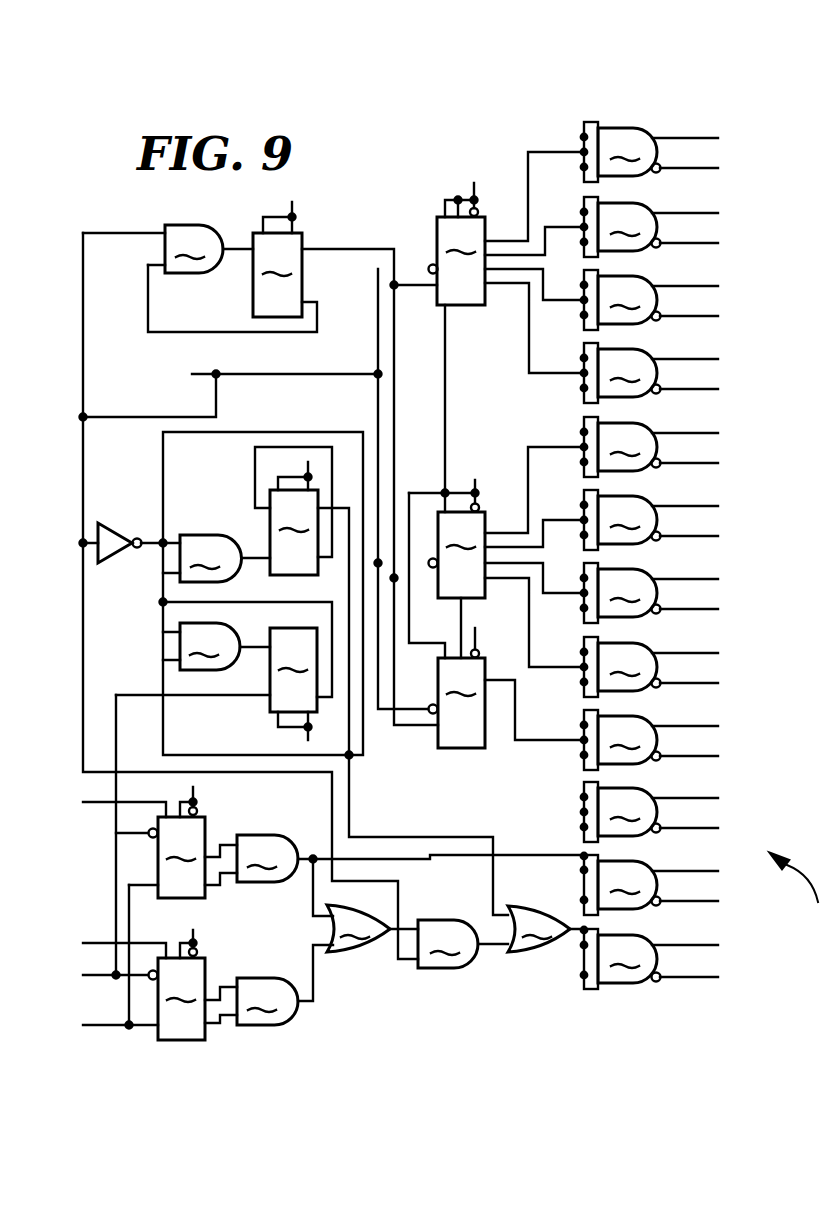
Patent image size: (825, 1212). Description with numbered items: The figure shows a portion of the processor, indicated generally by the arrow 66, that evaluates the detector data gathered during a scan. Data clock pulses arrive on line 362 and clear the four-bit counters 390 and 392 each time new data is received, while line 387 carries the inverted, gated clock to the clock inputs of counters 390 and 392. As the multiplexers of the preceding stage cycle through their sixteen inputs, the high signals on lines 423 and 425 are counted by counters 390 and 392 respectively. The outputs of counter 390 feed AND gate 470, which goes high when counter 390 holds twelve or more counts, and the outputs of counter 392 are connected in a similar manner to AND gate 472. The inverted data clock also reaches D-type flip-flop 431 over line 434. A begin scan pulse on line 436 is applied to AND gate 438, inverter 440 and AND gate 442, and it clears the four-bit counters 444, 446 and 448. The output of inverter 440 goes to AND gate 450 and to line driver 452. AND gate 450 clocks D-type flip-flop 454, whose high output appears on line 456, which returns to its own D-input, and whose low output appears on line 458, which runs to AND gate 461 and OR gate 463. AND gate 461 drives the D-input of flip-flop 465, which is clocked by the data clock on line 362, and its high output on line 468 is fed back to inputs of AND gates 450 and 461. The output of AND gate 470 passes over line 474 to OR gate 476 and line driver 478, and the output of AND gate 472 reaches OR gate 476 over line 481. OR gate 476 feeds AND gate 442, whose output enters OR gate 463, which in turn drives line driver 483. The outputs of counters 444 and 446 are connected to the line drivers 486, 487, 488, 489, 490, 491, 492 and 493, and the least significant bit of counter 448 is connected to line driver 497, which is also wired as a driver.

The control logic circuit 66 is at (797, 888).
The line 362 is at (100, 978).
The line 387 is at (143, 1024).
The 4-bit counter 390 is at (167, 842).
The 4-bit counter 392 is at (177, 985).
The line 423 is at (132, 801).
The line 425 is at (138, 942).
The D-type flip-flop 431 is at (345, 259).
The line 434 is at (249, 301).
The line 436 is at (193, 373).
The AND gate 438 is at (168, 249).
The invertor 440 is at (121, 530).
The AND gate 442 is at (448, 944).
The 4-bit counter 444 is at (507, 332).
The 4-bit counter 446 is at (496, 557).
The 4-bit counter 448 is at (507, 688).
The AND gate 450 is at (216, 558).
The line driver 452 is at (649, 812).
The D-type flip-flop 454 is at (294, 518).
The line 456 is at (255, 463).
The line 458 is at (349, 573).
The AND gate 461 is at (216, 646).
The OR gate 463 is at (539, 929).
The flip-flop 465 is at (216, 684).
The line 468 is at (292, 603).
The AND gate 470 is at (267, 858).
The AND gate 472 is at (267, 1001).
The line 474 is at (299, 868).
The OR gate 476 is at (358, 928).
The line driver 478 is at (649, 885).
The line 481 is at (313, 972).
The line driver 483 is at (649, 958).
The line driver 486 is at (649, 152).
The line driver 487 is at (649, 227).
The line driver 488 is at (649, 300).
The line driver 489 is at (649, 373).
The line driver 490 is at (649, 447).
The line driver 491 is at (649, 520).
The line driver 492 is at (649, 593).
The line driver 493 is at (649, 667).
The line driver 497 is at (649, 740).